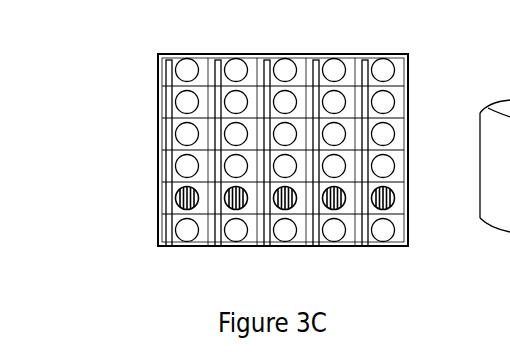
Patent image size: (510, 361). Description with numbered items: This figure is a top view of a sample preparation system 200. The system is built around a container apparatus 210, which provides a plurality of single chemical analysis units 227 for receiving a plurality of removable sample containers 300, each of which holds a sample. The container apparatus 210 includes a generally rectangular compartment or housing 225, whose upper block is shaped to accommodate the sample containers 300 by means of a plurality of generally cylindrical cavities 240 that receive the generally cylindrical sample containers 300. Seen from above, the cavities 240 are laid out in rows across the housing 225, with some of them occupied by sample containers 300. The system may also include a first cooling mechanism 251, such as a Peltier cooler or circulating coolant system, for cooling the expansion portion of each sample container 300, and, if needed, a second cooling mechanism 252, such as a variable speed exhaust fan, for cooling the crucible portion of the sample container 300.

The sample preparation system 200 is at (131, 152).
The container apparatus 210 is at (304, 51).
The housing 225 is at (409, 62).
The chemical analysis units 227 is at (157, 122).
The cavities 240 is at (236, 70).
The first cooling mechanism 251 is at (317, 247).
The second cooling mechanism 252 is at (386, 131).
The sample containers 300 is at (388, 195).